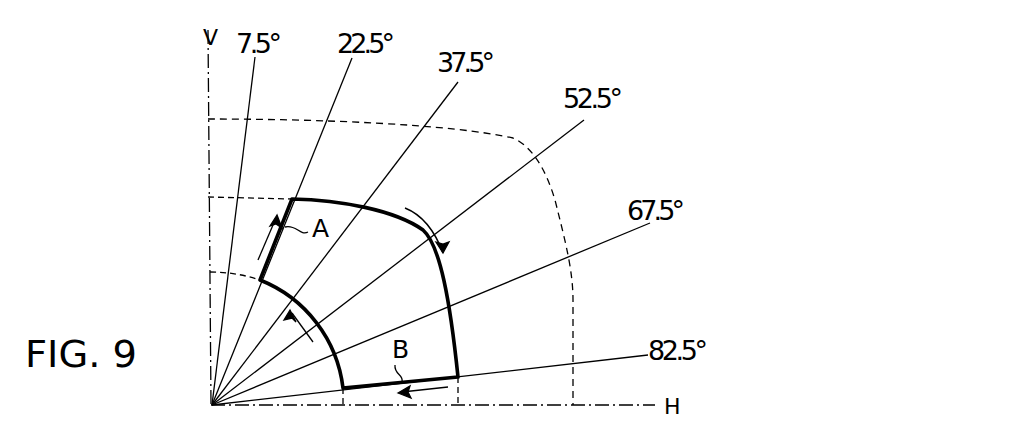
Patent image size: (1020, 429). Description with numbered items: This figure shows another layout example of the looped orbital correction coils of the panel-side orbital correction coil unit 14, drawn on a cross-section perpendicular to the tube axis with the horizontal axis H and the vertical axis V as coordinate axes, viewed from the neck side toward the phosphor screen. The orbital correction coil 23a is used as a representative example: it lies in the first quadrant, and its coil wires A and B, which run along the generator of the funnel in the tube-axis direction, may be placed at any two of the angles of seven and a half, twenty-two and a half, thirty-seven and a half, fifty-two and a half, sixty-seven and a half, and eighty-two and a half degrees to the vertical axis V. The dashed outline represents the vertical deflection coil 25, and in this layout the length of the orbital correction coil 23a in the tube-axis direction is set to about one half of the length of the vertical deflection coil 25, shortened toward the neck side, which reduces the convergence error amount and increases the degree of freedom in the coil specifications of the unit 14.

The panel-side orbital correction coil unit 14 is at (424, 198).
The orbital correction coil 23a is at (462, 340).
The vertical deflection coil 25 is at (567, 287).